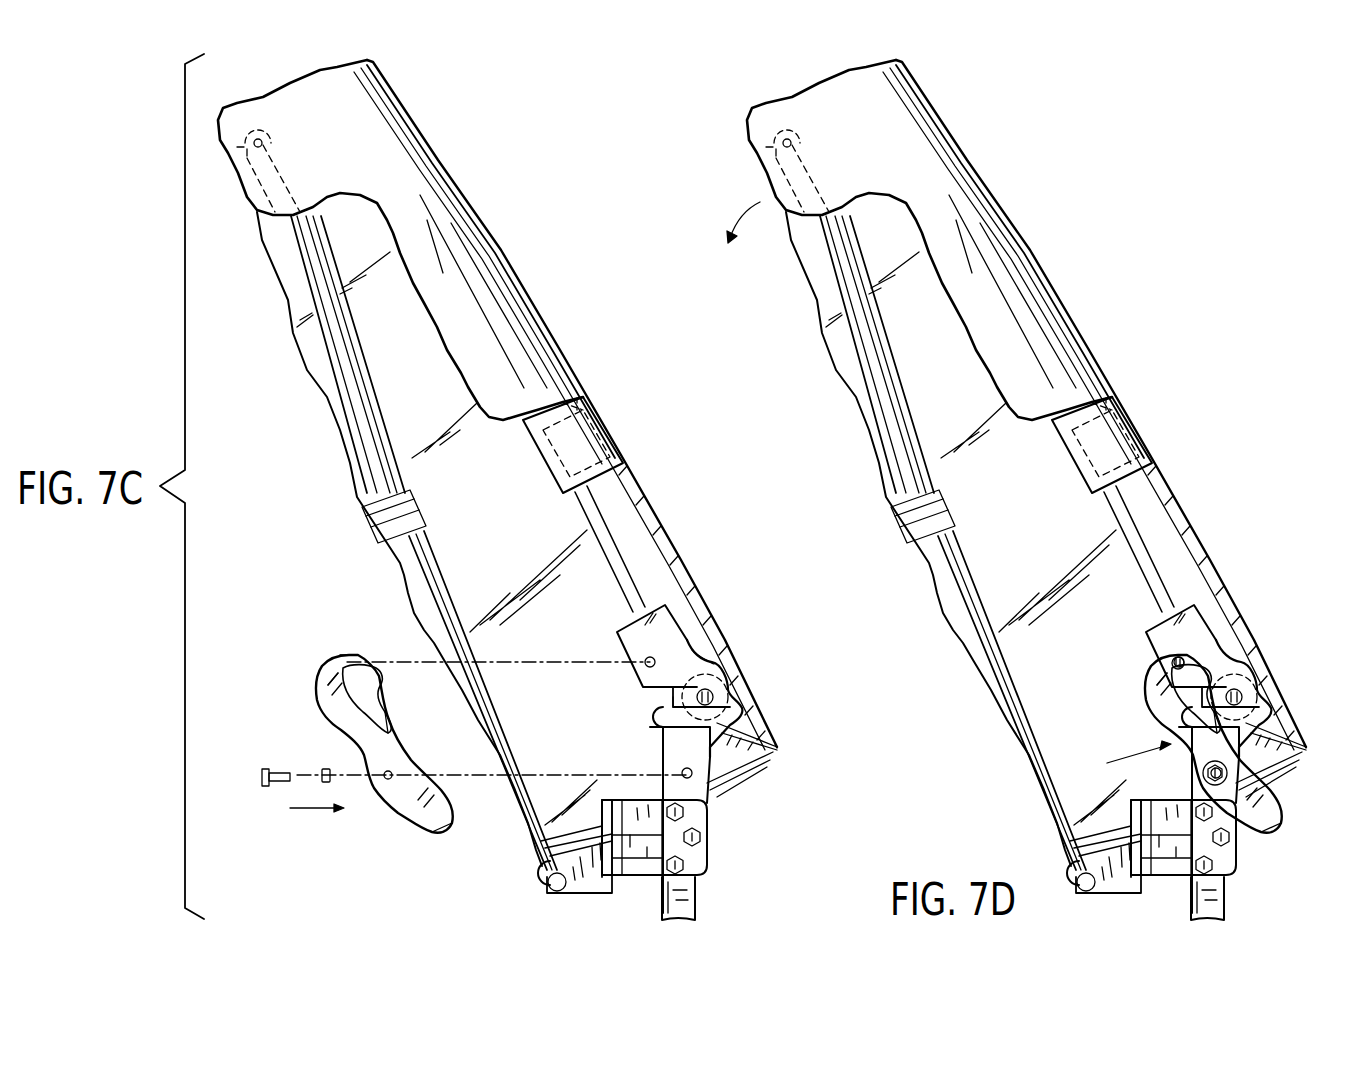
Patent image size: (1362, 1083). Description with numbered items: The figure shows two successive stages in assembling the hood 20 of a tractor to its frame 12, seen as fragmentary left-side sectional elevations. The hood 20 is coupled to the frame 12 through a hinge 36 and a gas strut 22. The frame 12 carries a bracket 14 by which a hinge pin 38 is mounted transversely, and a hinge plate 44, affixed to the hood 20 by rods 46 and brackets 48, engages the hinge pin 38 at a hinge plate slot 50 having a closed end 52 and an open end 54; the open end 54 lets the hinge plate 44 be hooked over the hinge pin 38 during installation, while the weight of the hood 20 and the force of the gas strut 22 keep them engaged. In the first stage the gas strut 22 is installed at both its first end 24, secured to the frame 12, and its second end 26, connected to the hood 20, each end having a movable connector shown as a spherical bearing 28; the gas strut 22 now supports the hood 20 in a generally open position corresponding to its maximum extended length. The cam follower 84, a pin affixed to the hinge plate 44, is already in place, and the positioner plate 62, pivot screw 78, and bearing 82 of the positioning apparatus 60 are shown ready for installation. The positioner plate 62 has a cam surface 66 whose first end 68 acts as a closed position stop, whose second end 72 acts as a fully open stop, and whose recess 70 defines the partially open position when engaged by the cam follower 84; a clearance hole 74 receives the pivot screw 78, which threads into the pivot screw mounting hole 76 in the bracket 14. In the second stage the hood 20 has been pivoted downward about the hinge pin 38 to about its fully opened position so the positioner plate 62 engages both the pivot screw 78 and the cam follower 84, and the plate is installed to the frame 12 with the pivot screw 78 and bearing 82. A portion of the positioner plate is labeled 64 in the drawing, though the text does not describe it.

In FIG. 7C, the frame 12 is at (697, 879).
In FIG. 7D, the frame 12 is at (1233, 898).
In FIG. 7C, the bracket 14 is at (662, 750).
In FIG. 7D, the bracket 14 is at (1154, 814).
In FIG. 7C, the hood 20 is at (502, 250).
In FIG. 7D, the hood 20 is at (1026, 463).
In FIG. 7C, the gas strut 22 is at (328, 362).
In FIG. 7D, the gas strut 22 is at (926, 507).
In FIG. 7C, the first end 24 is at (533, 878).
In FIG. 7D, the first end 24 is at (1046, 871).
In FIG. 7C, the second end 26 is at (230, 150).
In FIG. 7D, the second end 26 is at (764, 162).
In FIG. 7C, the spherical bearing 28 is at (547, 887).
In FIG. 7D, the spherical bearing 28 is at (928, 486).
In FIG. 7C, the hinge 36 is at (713, 637).
In FIG. 7D, the hinge 36 is at (1282, 698).
In FIG. 7C, the hinge pin 38 is at (722, 687).
In FIG. 7D, the hinge pin 38 is at (1259, 680).
In FIG. 7C, the hinge plate 44 is at (770, 727).
In FIG. 7D, the hinge plate 44 is at (1321, 735).
In FIG. 7C, the rod 46 is at (656, 546).
In FIG. 7D, the rod 46 is at (1167, 549).
In FIG. 7C, the bracket 48 is at (566, 400).
In FIG. 7D, the bracket 48 is at (1102, 422).
In FIG. 7C, the hinge plate slot 50 is at (684, 616).
In FIG. 7C, the closed end 52 is at (715, 697).
In FIG. 7C, the open end 54 is at (650, 697).
In FIG. 7D, the positioning apparatus 60 is at (1125, 758).
In FIG. 7C, the positioner plate 62 is at (340, 733).
In FIG. 7D, the positioner plate 62 is at (1195, 744).
In FIG. 7C, the lever arm 64 is at (453, 795).
In FIG. 7D, the lever arm 64 is at (1299, 810).
In FIG. 7C, the cam surface 66 is at (343, 687).
In FIG. 7D, the cam surface 66 is at (1137, 698).
In FIG. 7C, the first end 68 is at (388, 732).
In FIG. 7D, the first end 68 is at (1254, 753).
In FIG. 7C, the recess 70 is at (383, 666).
In FIG. 7C, the second end 72 is at (340, 653).
In FIG. 7C, the clearance hole 74 is at (387, 780).
In FIG. 7C, the pivot screw mounting hole 76 is at (692, 777).
In FIG. 7C, the pivot screw 78 is at (267, 787).
In FIG. 7D, the pivot screw 78 is at (1184, 774).
In FIG. 7C, the bearing 82 is at (325, 770).
In FIG. 7C, the cam follower 84 is at (647, 668).
In FIG. 7D, the cam follower 84 is at (1154, 651).